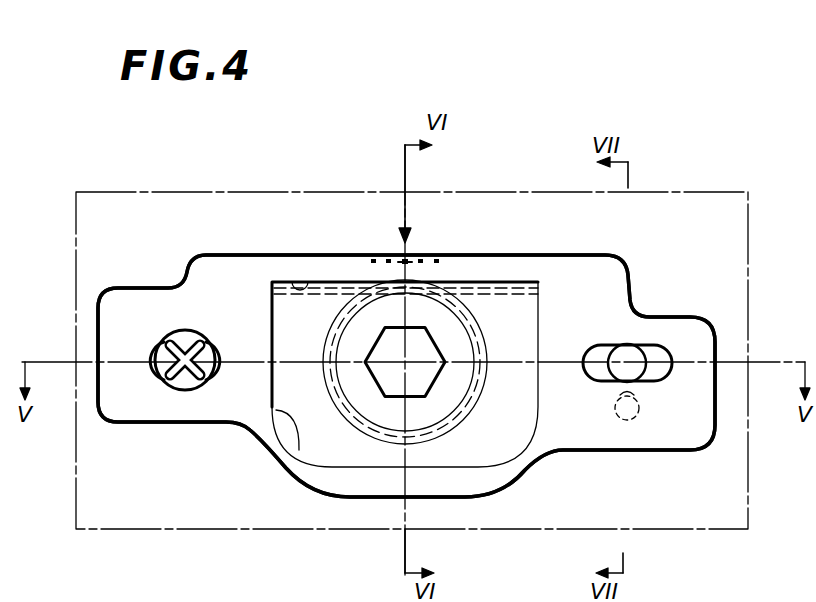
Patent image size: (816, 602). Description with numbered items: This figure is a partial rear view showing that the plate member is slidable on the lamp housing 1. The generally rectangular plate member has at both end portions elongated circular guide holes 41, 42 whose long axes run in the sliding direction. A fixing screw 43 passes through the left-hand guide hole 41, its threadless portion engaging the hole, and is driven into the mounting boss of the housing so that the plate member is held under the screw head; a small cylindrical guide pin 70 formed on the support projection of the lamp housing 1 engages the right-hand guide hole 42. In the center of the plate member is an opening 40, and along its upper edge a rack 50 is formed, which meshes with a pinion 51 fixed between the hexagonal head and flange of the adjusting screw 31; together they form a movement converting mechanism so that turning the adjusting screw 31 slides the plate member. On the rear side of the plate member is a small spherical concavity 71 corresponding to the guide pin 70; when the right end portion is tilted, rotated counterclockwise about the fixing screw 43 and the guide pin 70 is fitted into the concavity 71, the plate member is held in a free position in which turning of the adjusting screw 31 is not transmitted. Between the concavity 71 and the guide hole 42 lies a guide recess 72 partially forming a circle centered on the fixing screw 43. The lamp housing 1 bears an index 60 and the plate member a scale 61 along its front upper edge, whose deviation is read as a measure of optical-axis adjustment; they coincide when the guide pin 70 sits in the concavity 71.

The lamp housing 1 is at (87, 186).
The adjusting screw 31 is at (423, 377).
The opening 40 is at (300, 440).
The guide hole 41 is at (148, 378).
The guide hole 42 is at (600, 345).
The fixing screw 43 is at (183, 330).
The rack 50 is at (303, 290).
The pinion 51 is at (486, 328).
The index 60 is at (410, 238).
The scale 61 is at (405, 263).
The guide pin 70 is at (632, 357).
The concavity 71 is at (621, 393).
The guide recess 72 is at (638, 398).